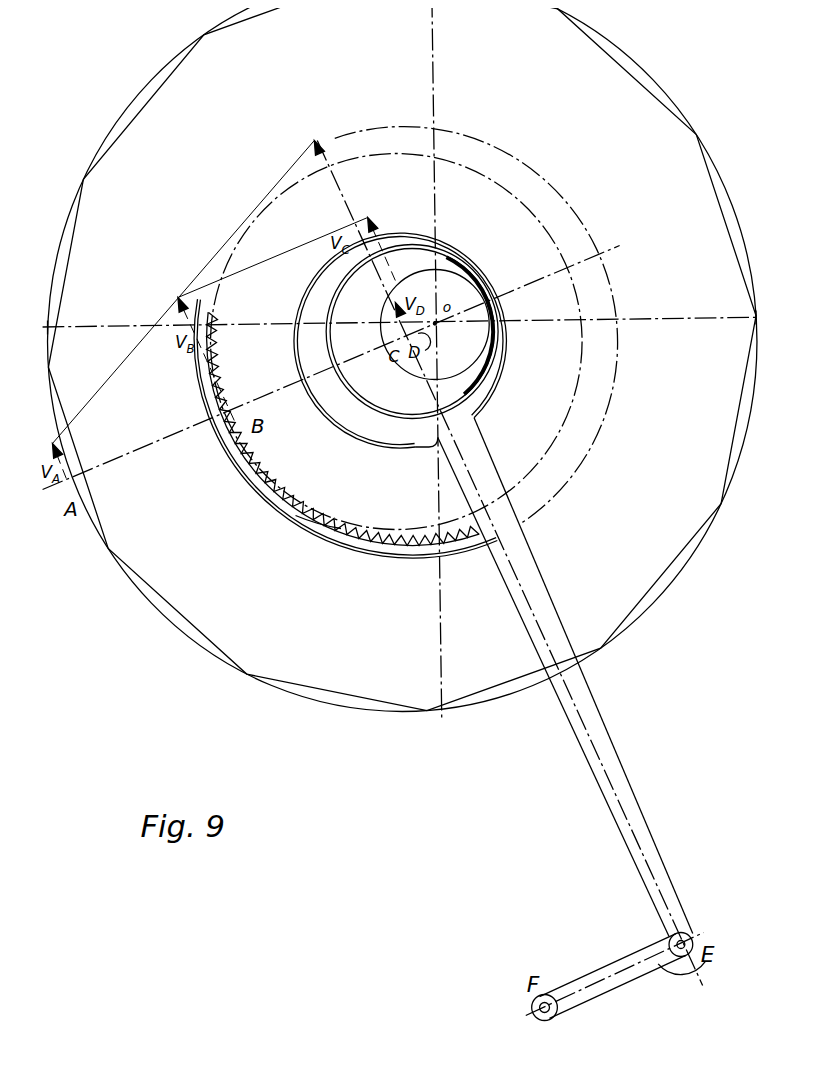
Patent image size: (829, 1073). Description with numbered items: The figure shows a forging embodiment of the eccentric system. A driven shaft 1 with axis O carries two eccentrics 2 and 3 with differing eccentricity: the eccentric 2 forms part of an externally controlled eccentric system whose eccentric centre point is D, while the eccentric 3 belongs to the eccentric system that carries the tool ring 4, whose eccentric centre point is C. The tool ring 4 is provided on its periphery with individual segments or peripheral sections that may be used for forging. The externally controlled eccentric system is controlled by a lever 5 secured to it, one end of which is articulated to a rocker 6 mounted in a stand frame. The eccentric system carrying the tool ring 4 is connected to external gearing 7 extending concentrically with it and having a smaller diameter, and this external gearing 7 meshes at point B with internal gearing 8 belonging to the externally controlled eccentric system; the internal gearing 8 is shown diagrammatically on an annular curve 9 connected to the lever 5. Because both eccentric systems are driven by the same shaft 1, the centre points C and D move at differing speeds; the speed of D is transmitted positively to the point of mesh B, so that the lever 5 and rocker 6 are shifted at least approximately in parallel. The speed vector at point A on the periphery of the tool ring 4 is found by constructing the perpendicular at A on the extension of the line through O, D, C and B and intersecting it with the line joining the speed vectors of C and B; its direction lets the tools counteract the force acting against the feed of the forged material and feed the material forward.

The shaft 1 is at (462, 288).
The eccentric 2 is at (407, 257).
The eccentric 3 is at (327, 288).
The tool ring 4 is at (256, 90).
The lever 5 is at (618, 749).
The rocker 6 is at (602, 970).
The external gearing 7 is at (283, 476).
The internal gearing 8 is at (314, 533).
The annular curve 9 is at (290, 511).